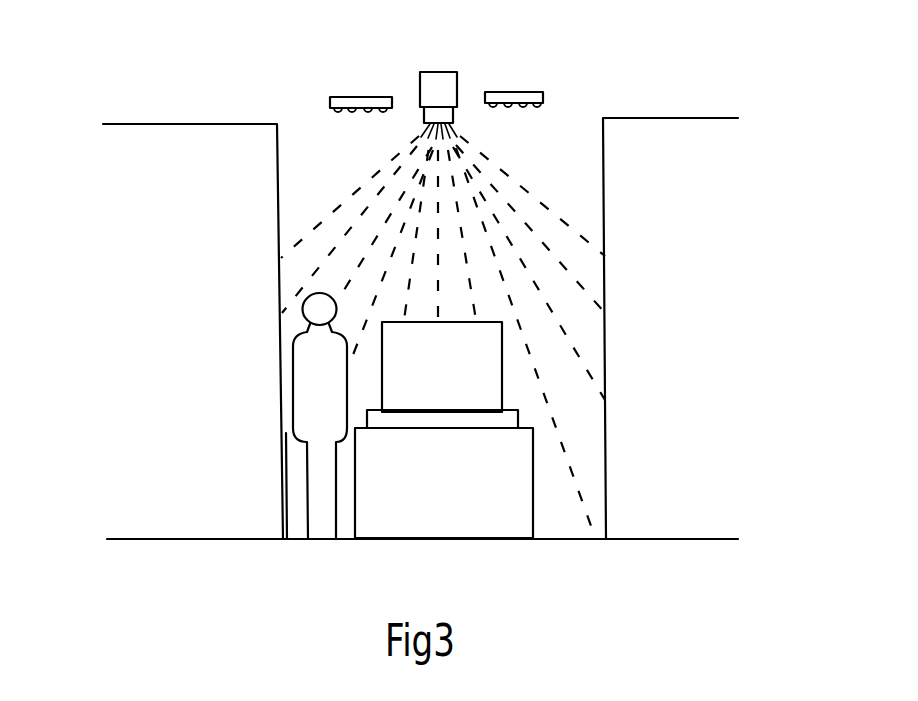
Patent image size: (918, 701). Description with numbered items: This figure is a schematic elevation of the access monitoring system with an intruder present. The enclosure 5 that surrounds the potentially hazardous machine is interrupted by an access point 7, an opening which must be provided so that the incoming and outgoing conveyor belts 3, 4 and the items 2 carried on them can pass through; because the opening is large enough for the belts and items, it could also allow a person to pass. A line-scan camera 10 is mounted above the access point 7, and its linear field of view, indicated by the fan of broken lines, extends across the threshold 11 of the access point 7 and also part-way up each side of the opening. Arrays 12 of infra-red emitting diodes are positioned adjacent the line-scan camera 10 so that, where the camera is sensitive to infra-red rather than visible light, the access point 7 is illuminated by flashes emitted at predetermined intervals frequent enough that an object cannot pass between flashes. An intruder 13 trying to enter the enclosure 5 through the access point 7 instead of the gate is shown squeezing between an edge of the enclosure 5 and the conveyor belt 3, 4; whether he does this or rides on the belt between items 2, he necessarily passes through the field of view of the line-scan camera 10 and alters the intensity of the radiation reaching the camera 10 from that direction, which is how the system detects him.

The items to be processed 2 is at (480, 375).
The incoming conveyor belt 3 is at (477, 520).
The outgoing conveyor belt 4 is at (442, 419).
The enclosure 5 is at (182, 158).
The access point 7 is at (318, 195).
The line-scan camera 10 is at (450, 92).
The threshold 11 is at (568, 538).
The arrays of infra-red emitting diodes 12 is at (360, 102).
The intruder 13 is at (323, 410).